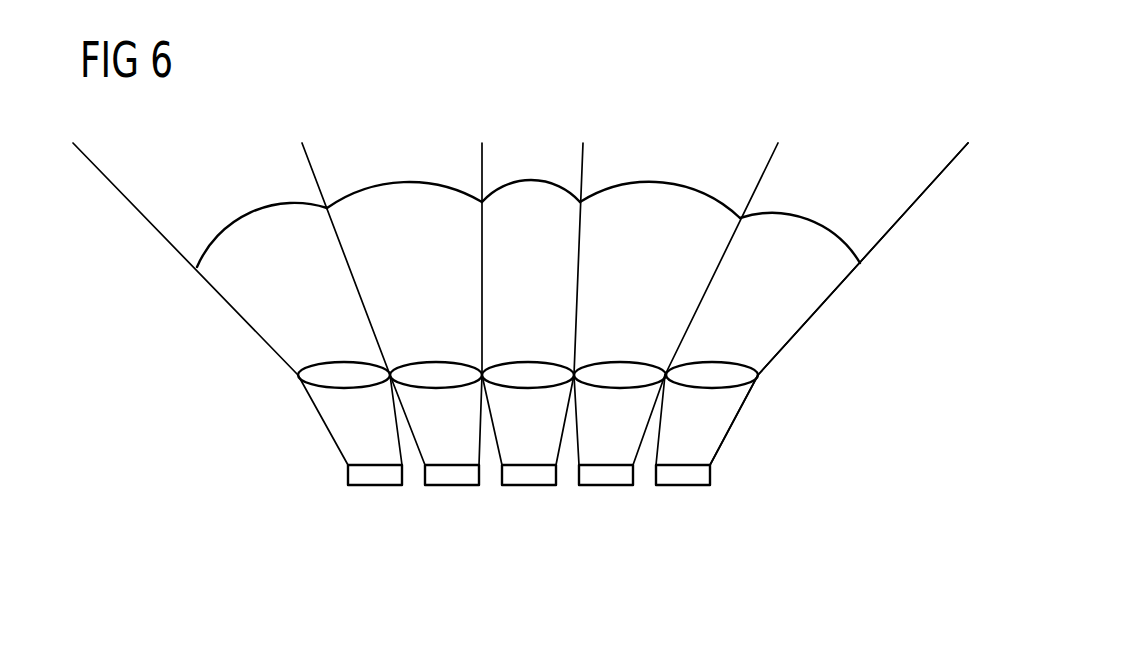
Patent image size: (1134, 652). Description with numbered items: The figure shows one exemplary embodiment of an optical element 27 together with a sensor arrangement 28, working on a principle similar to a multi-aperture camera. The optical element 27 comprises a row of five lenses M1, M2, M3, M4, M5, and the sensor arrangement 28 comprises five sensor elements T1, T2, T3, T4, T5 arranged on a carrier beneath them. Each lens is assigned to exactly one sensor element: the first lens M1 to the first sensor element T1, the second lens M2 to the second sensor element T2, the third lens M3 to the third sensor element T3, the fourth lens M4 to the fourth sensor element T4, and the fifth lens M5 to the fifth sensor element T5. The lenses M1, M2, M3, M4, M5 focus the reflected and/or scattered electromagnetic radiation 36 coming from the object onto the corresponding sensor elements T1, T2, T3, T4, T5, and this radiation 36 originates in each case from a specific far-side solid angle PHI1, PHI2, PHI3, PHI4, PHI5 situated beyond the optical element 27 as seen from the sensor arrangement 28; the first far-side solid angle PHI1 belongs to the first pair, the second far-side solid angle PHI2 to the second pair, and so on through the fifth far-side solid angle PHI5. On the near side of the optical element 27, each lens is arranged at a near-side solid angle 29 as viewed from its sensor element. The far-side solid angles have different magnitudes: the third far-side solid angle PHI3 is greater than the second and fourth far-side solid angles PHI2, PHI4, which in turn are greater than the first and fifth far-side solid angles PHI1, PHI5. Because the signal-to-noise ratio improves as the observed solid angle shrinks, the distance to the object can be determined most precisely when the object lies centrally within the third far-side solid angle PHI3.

The optical element 27 is at (583, 341).
The sensor arrangement 28 is at (580, 511).
The near-side solid angle 29 is at (768, 421).
The electromagnetic radiation 36 is at (903, 194).
The first lens M1 is at (342, 362).
The second lens M2 is at (427, 362).
The third lens M3 is at (520, 362).
The fourth lens M4 is at (615, 362).
The fifth lens M5 is at (718, 362).
The first sensor element T1 is at (375, 485).
The second sensor element T2 is at (450, 485).
The third sensor element T3 is at (527, 485).
The fourth sensor element T4 is at (605, 485).
The fifth sensor element T5 is at (682, 485).
The first far-side solid angle PHI1 is at (252, 216).
The second far-side solid angle PHI2 is at (407, 181).
The third far-side solid angle PHI3 is at (543, 181).
The fourth far-side solid angle PHI4 is at (664, 181).
The fifth far-side solid angle PHI5 is at (829, 218).